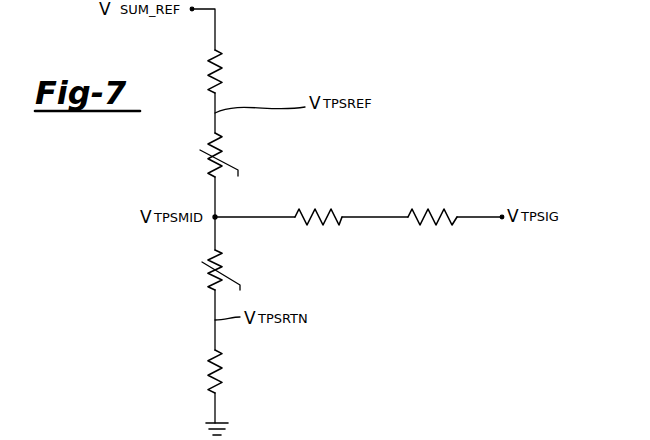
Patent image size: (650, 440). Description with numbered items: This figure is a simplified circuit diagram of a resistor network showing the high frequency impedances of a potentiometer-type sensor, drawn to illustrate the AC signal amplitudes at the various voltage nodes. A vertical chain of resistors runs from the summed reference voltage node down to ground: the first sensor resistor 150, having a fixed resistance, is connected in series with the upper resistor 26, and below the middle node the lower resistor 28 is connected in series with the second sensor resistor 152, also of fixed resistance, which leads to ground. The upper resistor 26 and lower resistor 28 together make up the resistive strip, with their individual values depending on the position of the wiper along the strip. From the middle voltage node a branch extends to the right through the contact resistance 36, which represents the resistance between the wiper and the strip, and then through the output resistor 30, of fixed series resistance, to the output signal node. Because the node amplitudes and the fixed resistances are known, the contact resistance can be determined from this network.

The first sensor resistor 150 is at (215, 78).
The upper resistor 26 is at (218, 144).
The contact resistance 36 is at (321, 217).
The output resistor 30 is at (424, 214).
The lower resistor 28 is at (218, 262).
The second sensor resistor 152 is at (218, 378).